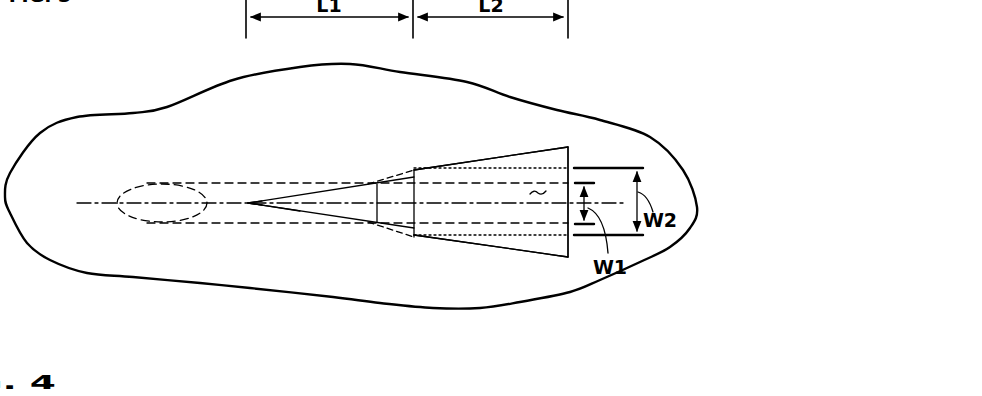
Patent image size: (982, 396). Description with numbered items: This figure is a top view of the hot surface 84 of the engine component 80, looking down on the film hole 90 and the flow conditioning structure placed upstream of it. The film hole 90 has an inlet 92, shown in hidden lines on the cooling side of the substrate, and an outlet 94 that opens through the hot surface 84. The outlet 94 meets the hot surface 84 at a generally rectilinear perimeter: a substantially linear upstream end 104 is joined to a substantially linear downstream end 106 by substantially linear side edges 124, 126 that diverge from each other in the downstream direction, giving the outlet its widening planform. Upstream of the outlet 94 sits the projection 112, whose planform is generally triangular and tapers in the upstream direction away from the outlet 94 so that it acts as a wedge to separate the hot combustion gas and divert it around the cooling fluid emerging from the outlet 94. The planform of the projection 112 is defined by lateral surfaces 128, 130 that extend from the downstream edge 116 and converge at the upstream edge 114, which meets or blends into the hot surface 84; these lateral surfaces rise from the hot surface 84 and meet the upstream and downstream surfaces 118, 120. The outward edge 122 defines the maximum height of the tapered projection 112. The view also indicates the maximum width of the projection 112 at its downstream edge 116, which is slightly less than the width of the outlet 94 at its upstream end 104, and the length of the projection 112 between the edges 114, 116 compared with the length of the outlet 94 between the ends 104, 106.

The engine component 80 is at (148, 137).
The hot surface 84 is at (188, 134).
The film hole 90 is at (218, 228).
The inlet 92 is at (137, 217).
The outlet 94 is at (538, 193).
The upstream end 104 is at (433, 167).
The downstream end 106 is at (573, 163).
The flow conditioning structure 112 is at (338, 186).
The upstream edge 114 is at (245, 202).
The downstream edge 116 is at (415, 218).
The upstream surface 118 is at (335, 210).
The downstream surface 120 is at (390, 210).
The outward edge 122 is at (368, 184).
The side edge 124 is at (512, 148).
The side edge 126 is at (500, 248).
The lateral surface 128 is at (310, 185).
The lateral surface 130 is at (290, 210).